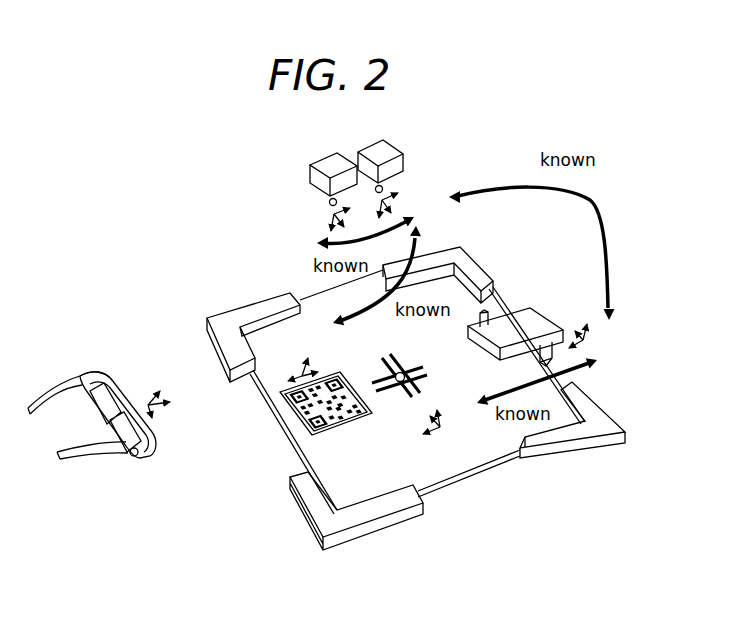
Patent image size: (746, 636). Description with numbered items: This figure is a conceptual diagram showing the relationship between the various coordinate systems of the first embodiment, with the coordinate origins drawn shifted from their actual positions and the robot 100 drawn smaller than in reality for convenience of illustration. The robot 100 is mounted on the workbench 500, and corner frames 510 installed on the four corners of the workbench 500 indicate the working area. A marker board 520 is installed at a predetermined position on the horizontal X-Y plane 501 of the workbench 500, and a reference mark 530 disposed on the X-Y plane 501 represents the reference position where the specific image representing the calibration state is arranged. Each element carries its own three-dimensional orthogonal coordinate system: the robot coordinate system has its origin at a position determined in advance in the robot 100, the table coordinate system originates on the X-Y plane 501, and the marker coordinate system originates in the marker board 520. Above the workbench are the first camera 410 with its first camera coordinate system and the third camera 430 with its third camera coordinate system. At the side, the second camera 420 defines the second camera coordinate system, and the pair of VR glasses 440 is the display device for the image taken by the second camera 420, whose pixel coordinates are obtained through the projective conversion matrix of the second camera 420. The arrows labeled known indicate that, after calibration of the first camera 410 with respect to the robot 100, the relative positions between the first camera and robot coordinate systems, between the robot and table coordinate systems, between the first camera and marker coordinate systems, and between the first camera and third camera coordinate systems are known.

The robot 100 is at (540, 317).
The first camera 410 is at (387, 148).
The third camera 430 is at (338, 157).
The second camera 420 is at (143, 463).
The pair of VR glasses 440 is at (65, 378).
The workbench 500 is at (455, 484).
The X-Y plane 501 is at (457, 449).
The corner frames 510 is at (247, 303).
The marker board 520 is at (327, 435).
The reference mark 530 is at (380, 370).